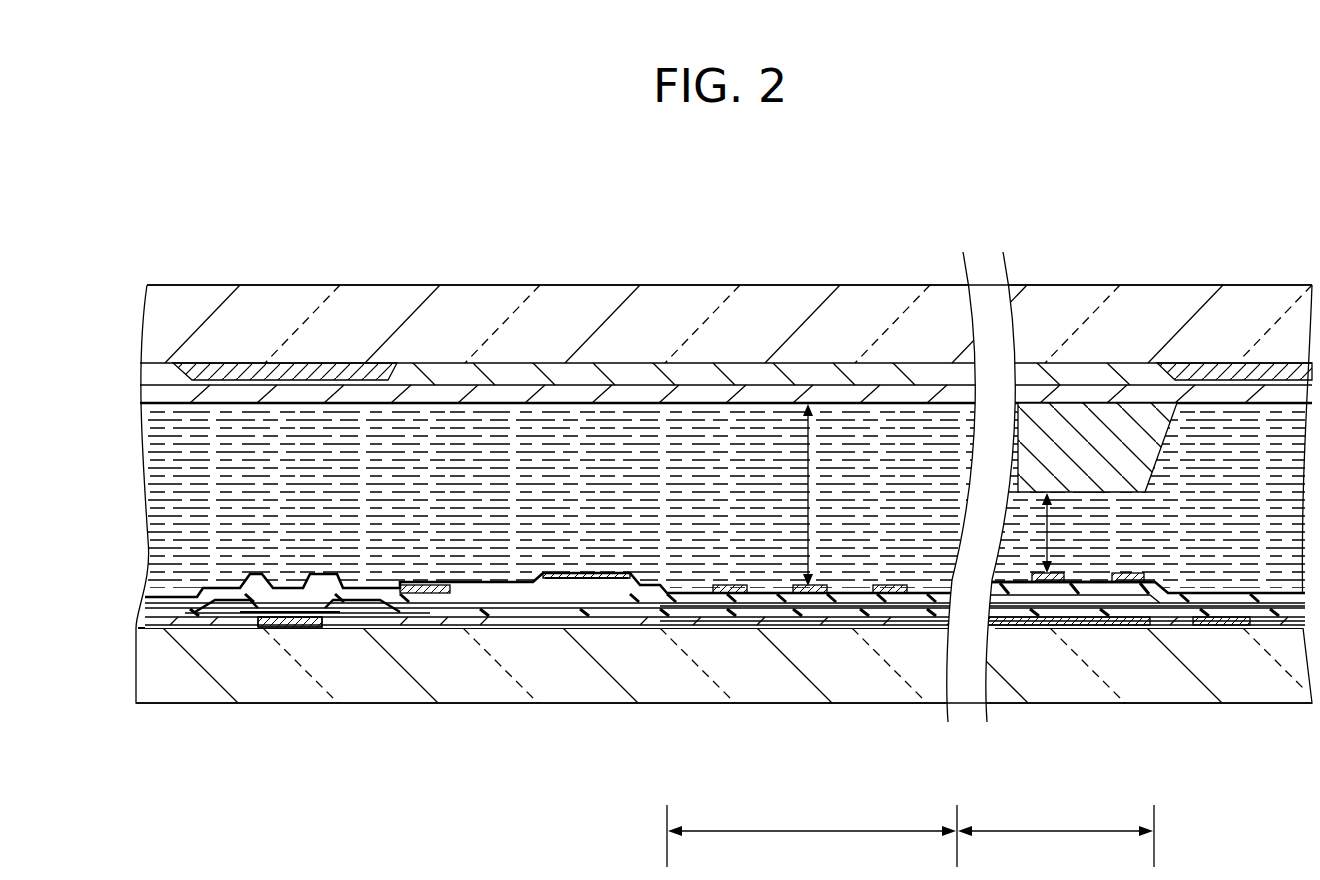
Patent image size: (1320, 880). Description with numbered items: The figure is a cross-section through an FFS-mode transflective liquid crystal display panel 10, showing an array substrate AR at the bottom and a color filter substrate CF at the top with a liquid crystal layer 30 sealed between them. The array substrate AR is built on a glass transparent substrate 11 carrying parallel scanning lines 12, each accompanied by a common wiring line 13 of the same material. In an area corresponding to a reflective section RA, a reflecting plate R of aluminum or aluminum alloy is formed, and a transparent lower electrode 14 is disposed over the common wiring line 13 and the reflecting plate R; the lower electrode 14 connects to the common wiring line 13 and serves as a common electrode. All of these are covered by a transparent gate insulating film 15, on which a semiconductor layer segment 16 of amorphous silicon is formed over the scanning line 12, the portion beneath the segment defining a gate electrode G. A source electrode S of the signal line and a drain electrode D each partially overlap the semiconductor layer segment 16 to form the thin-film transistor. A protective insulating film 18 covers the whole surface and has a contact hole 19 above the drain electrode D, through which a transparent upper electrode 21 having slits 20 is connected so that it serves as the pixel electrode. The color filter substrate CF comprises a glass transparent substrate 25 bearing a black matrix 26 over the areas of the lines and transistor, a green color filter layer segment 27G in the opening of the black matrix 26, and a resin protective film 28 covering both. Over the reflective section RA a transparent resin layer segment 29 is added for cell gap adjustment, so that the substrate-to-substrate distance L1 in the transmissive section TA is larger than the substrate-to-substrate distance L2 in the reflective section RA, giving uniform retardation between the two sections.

The FFS-mode transflective liquid crystal display panel 10 is at (558, 197).
The transparent substrate 11 is at (146, 672).
The scanning line 12 is at (312, 622).
The common wiring line 13 is at (597, 590).
The lower electrode 14 is at (708, 620).
The gate insulating film 15 is at (840, 610).
The semiconductor layer segment 16 is at (246, 606).
The protective insulating film 18 is at (148, 600).
The contact hole 19 is at (432, 592).
The slit 20 is at (683, 578).
The upper electrode 21 is at (735, 583).
The transparent substrate 25 is at (150, 326).
The black matrix 26 is at (320, 365).
The color filter layer segment 27G is at (153, 372).
The protective film 28 is at (153, 398).
The transparent resin layer segment 29 is at (1070, 410).
The liquid crystal layer 30 is at (150, 458).
The source electrode S is at (228, 606).
The drain electrode D is at (348, 604).
The gate electrode G is at (309, 705).
The reflecting plate R is at (1032, 622).
The color filter substrate CF is at (914, 238).
The array substrate AR is at (504, 744).
The substrate-to-substrate distance L1 is at (826, 495).
The substrate-to-substrate distance L2 is at (1065, 533).
The transmissive section TA is at (812, 831).
The reflective section RA is at (1056, 831).